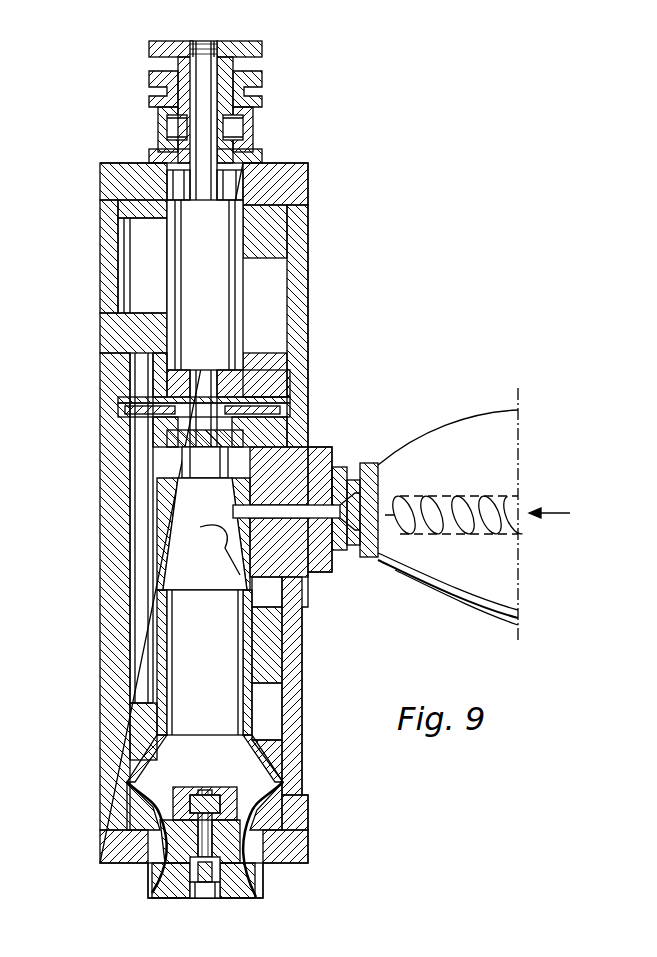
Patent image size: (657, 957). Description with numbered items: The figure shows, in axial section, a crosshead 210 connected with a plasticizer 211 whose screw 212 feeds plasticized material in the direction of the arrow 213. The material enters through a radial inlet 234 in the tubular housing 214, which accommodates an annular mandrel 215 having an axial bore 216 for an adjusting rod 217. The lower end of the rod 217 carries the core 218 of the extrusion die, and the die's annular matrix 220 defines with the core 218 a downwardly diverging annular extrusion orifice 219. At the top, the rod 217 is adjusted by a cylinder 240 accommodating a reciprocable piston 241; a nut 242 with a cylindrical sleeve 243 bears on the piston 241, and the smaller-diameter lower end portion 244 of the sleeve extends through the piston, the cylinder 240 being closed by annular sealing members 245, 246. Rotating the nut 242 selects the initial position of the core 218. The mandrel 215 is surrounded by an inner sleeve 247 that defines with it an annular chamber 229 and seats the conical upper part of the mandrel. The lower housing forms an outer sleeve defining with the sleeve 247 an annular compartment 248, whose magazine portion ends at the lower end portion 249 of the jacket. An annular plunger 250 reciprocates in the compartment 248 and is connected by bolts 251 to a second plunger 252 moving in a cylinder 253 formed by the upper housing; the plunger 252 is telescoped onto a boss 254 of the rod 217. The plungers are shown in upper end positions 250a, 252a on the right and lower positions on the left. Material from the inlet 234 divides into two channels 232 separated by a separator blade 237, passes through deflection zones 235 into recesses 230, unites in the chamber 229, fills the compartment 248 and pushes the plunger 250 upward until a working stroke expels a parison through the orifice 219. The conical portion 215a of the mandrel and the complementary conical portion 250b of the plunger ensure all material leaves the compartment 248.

The crosshead 210 is at (86, 400).
The plasticizer 211 is at (481, 425).
The screw 212 is at (482, 537).
The arrow 213 is at (556, 493).
The tubular housing 214 is at (110, 448).
The annular mandrel 215 is at (173, 683).
The conical portion 215a is at (265, 766).
The axial bore 216 is at (228, 788).
The adjusting rod 217 is at (198, 196).
The core 218 is at (181, 893).
The annular extrusion orifice 219 is at (152, 900).
The annular matrix 220 is at (150, 878).
The annular chamber 229 is at (238, 642).
The recesses 230 is at (191, 590).
The channels 232 is at (218, 506).
The radial inlet 234 is at (192, 590).
The deflection zones 235 is at (200, 527).
The separator blade 237 is at (250, 503).
The cylinder 240 is at (170, 135).
The reciprocable piston 241 is at (228, 137).
The nut 242 is at (253, 41).
The cylindrical sleeve 243 is at (233, 68).
The lower end portion of the sleeve 244 is at (223, 121).
The annular sealing member 245 is at (149, 155).
The annular sealing member 246 is at (150, 97).
The inner sleeve 247 is at (155, 652).
The annular compartment 248 is at (276, 698).
The lower end portion of the jacket 249 is at (248, 737).
The annular plunger 250 is at (137, 722).
The upper end position of the plunger 250a is at (284, 626).
The conical portion of the plunger 250b is at (127, 762).
The bolts 251 is at (140, 623).
The second plunger 252 is at (110, 332).
The upper end position of the second plunger 252a is at (285, 240).
The cylinder 253 is at (132, 267).
The boss 254 is at (223, 300).